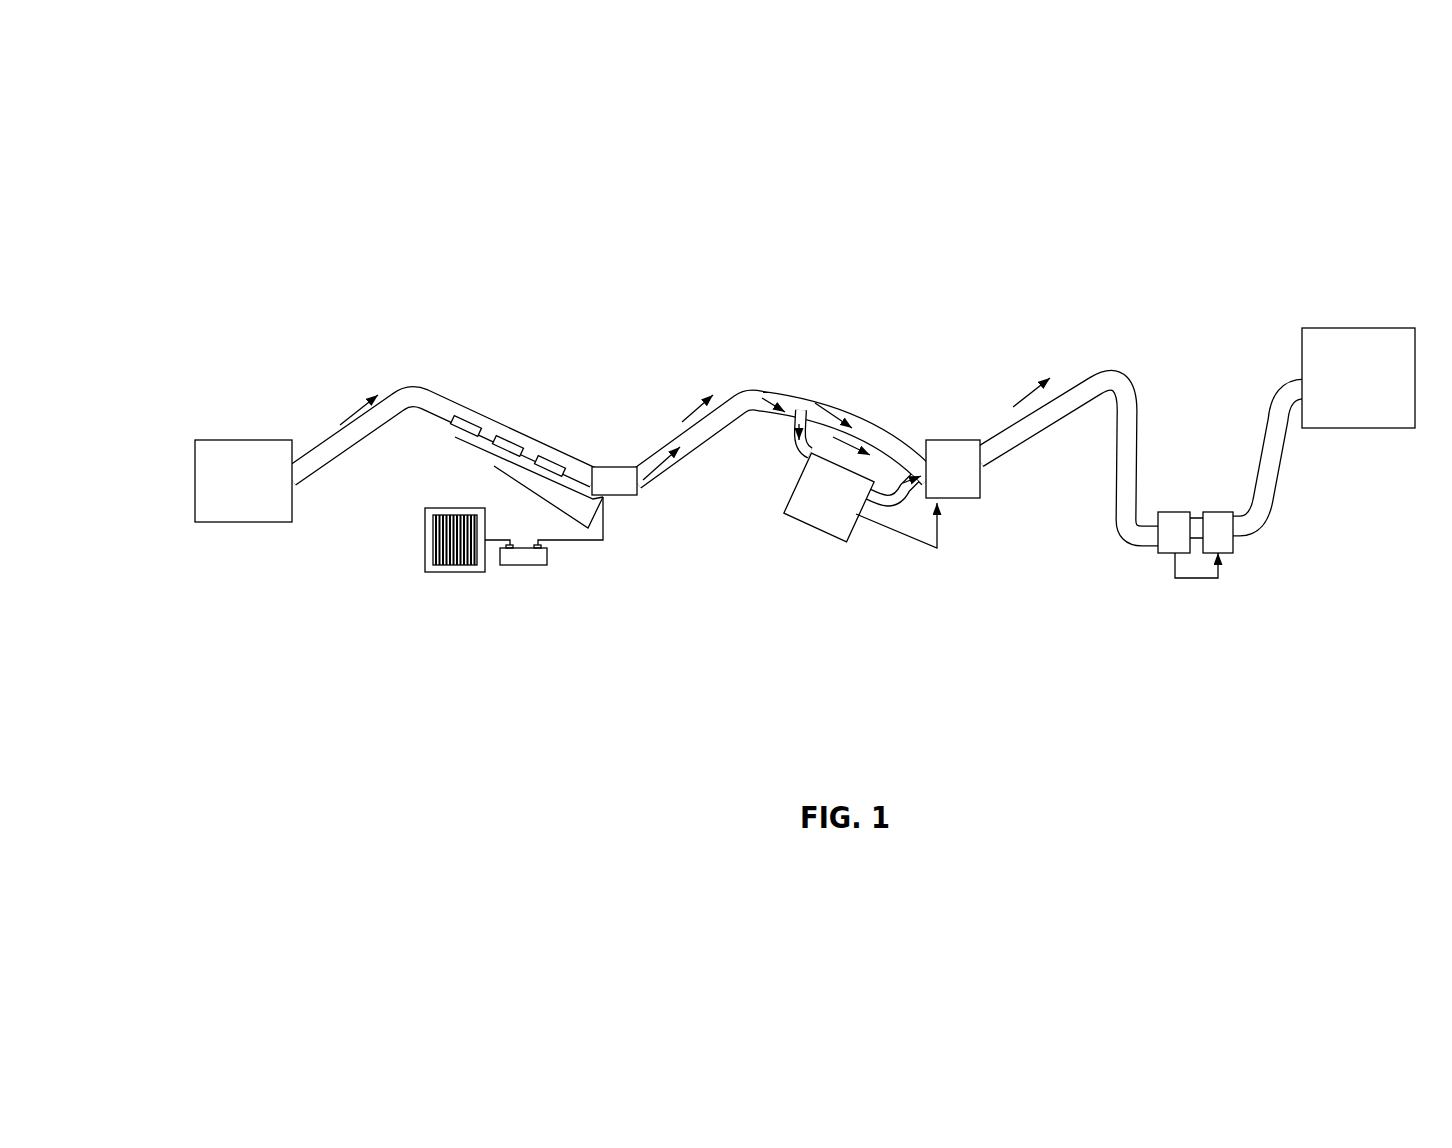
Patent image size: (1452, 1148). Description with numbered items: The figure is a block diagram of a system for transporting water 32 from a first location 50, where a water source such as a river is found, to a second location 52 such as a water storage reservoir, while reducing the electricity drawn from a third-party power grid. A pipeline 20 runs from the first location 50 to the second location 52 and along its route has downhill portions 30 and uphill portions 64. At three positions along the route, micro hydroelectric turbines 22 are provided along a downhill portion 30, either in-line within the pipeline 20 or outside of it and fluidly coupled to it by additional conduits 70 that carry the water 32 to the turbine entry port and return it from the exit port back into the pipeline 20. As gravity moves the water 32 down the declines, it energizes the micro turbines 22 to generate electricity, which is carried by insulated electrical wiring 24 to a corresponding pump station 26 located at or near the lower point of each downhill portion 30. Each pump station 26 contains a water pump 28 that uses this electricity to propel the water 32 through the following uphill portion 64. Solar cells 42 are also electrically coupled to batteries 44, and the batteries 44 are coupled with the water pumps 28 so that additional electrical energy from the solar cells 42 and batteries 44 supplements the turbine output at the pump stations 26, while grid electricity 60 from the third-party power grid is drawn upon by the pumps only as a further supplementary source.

The pipeline 20 is at (315, 492).
The micro hydroelectric turbine 22 is at (1178, 508).
The insulated electrical wiring 24 is at (470, 455).
The pump station 26 is at (790, 455).
The water pump 28 is at (1223, 508).
The downhill portion of pipeline 30 is at (1200, 225).
The water 32 is at (210, 515).
The solar cells 42 is at (451, 588).
The batteries 44 is at (526, 605).
The first location 50 is at (272, 432).
The second location 52 is at (1360, 322).
The grid electricity 60 is at (647, 553).
The uphill portion of pipeline 64 is at (1307, 478).
The fluid conduit 70 is at (792, 458).